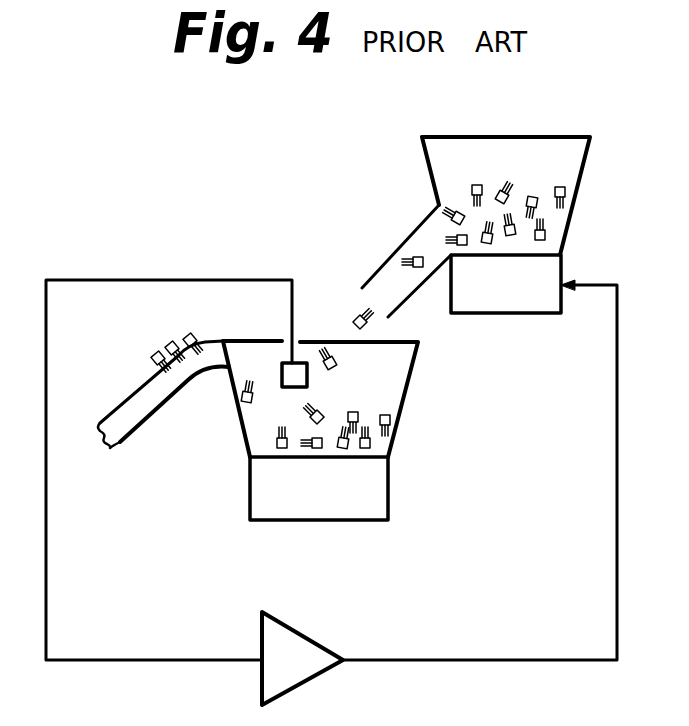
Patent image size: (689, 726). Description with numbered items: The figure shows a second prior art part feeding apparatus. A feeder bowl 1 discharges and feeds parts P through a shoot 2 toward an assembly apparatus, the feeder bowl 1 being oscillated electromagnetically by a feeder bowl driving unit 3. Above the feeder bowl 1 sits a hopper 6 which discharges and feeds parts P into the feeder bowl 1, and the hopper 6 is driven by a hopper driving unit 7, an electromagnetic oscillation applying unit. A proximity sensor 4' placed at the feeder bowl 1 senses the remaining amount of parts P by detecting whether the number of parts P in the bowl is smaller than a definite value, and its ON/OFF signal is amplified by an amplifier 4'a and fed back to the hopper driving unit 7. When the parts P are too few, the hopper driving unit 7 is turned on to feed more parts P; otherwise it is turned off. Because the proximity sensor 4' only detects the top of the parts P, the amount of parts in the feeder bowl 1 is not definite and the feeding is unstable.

The feeder bowl 1 is at (395, 383).
The shoot 2 is at (132, 418).
The feeder bowl driving unit 3 is at (390, 486).
The proximity sensor 4' is at (277, 340).
The amplifier 4'a is at (319, 642).
The hopper 6 is at (580, 178).
The hopper driving unit 7 is at (515, 314).
The parts P is at (473, 183).